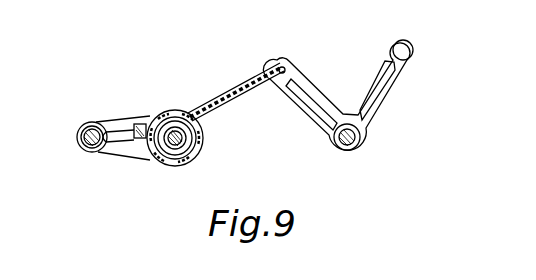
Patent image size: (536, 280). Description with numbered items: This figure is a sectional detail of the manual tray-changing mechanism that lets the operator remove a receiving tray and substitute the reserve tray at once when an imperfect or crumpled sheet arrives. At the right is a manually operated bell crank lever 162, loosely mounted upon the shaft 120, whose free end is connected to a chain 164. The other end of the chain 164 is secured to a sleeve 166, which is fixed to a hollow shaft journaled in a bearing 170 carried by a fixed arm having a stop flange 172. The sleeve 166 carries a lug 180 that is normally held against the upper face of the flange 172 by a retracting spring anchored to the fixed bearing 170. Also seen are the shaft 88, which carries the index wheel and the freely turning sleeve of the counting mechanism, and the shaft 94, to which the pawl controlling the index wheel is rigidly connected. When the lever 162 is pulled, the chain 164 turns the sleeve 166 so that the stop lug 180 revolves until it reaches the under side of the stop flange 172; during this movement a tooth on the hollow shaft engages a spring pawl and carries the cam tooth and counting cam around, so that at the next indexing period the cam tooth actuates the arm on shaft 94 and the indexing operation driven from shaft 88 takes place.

The shaft 88 is at (182, 141).
The shaft 94 is at (78, 137).
The shaft 120 is at (355, 137).
The bell crank lever 162 is at (312, 90).
The chain 164 is at (218, 99).
The sleeve 166 is at (197, 152).
The bearing 170 is at (149, 113).
The stop flange 172 is at (117, 150).
The lug 180 is at (137, 139).